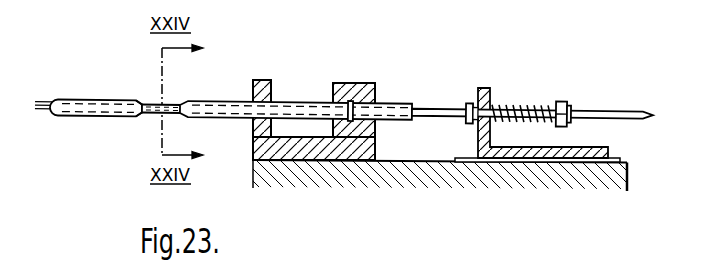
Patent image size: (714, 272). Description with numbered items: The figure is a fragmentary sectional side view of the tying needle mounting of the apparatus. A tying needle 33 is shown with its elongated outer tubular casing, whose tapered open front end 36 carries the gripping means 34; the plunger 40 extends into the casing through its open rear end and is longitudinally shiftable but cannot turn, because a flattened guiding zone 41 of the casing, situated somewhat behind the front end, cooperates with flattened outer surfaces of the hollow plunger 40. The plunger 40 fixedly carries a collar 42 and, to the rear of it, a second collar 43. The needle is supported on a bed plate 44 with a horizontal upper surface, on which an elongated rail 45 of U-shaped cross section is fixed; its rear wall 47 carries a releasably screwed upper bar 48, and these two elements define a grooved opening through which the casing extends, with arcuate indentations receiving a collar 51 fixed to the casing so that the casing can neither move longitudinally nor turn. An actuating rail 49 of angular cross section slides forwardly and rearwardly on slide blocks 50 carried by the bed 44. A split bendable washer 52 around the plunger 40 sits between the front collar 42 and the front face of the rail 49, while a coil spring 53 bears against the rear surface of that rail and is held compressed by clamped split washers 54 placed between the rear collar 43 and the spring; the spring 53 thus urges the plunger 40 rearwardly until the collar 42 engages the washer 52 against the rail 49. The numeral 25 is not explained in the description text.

The tube 25 is at (278, 100).
The tying needle 33 is at (127, 98).
The gripping means 34 is at (54, 101).
The open front end 36 is at (78, 98).
The plunger 40 is at (419, 105).
The guiding zone 41 is at (150, 111).
The collar 42 is at (467, 105).
The second collar 43 is at (571, 119).
The bed plate 44 is at (459, 166).
The rail 45 is at (293, 143).
The rear wall 47 is at (355, 149).
The upper bar 48 is at (366, 91).
The actuating rail 49 is at (485, 92).
The slide block 50 is at (462, 157).
The collar 51 is at (350, 97).
The split bendable washer 52 is at (476, 100).
The coil spring 53 is at (500, 108).
The split washer 54 is at (563, 101).